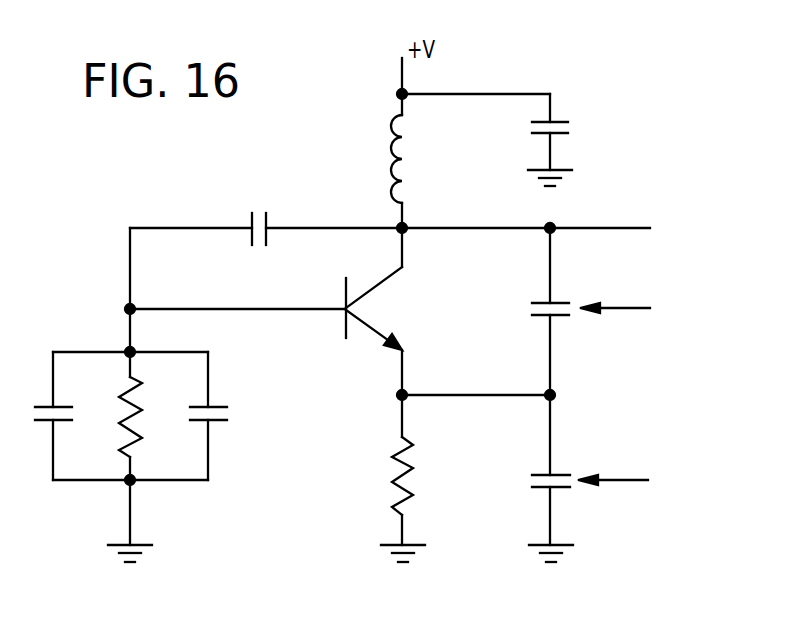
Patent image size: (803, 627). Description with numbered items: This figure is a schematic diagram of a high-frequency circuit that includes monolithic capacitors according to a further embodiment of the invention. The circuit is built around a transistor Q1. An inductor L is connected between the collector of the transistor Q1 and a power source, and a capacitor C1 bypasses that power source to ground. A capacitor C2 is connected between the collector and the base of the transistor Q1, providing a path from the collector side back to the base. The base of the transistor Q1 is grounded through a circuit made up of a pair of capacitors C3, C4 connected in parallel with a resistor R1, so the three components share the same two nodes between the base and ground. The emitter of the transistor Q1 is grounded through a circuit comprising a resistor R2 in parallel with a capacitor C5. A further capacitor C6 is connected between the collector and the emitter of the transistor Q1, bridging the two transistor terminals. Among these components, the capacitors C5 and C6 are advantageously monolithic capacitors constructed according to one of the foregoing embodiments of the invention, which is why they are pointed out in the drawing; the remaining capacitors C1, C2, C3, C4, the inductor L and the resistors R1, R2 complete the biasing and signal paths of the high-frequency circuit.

The capacitor C1 is at (564, 140).
The capacitor C2 is at (259, 212).
The capacitor C3 is at (36, 416).
The capacitor C4 is at (224, 416).
The capacitor C5 is at (574, 478).
The capacitor C6 is at (575, 311).
The inductor L is at (386, 171).
The transistor Q1 is at (367, 332).
The resistor R1 is at (146, 417).
The resistor R2 is at (392, 499).